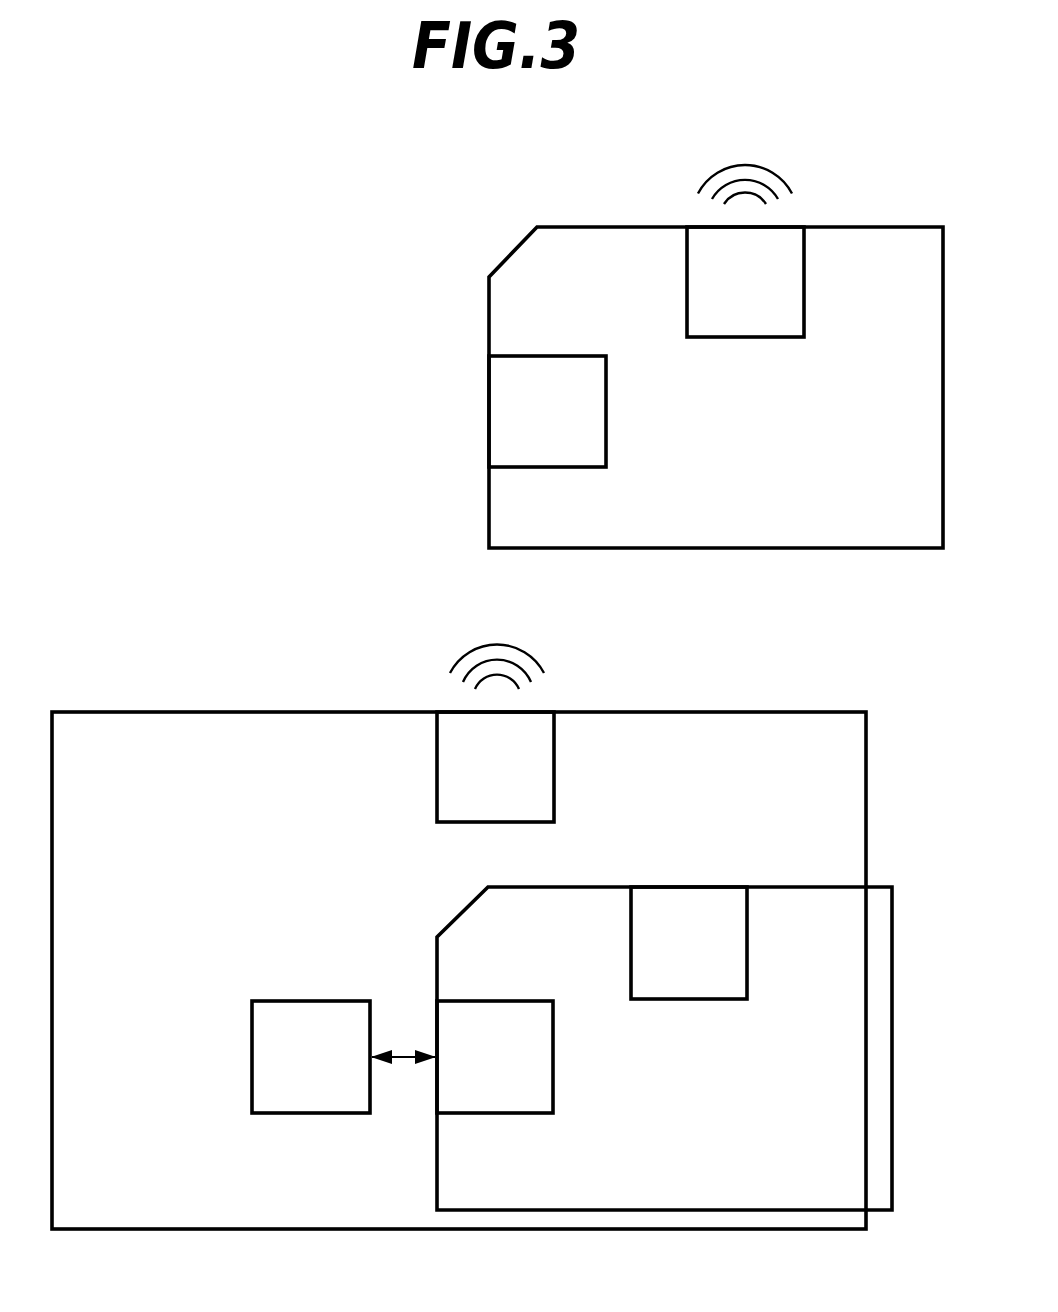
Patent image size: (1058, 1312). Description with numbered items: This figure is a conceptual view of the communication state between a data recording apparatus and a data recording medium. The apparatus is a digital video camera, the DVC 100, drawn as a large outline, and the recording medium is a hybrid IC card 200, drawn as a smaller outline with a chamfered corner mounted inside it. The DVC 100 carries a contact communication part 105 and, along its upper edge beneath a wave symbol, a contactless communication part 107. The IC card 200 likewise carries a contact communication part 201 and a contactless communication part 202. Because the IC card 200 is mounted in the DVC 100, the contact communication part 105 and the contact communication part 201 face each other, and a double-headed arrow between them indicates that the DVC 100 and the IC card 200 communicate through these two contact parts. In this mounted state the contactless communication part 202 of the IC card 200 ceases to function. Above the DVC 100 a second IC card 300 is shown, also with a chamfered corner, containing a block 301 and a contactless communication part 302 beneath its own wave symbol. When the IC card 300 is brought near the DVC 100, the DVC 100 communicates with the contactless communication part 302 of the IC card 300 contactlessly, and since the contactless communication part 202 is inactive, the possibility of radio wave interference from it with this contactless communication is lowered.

The digital video camera 100 is at (713, 712).
The contact communication part 105 is at (313, 1001).
The contactless communication part 107 is at (466, 822).
The hybrid IC card 200 is at (817, 862).
The contact communication part 201 is at (523, 975).
The contactless communication part 202 is at (689, 999).
The IC card 300 is at (867, 203).
The control unit 301 is at (577, 328).
The contactless communication part 302 is at (738, 337).